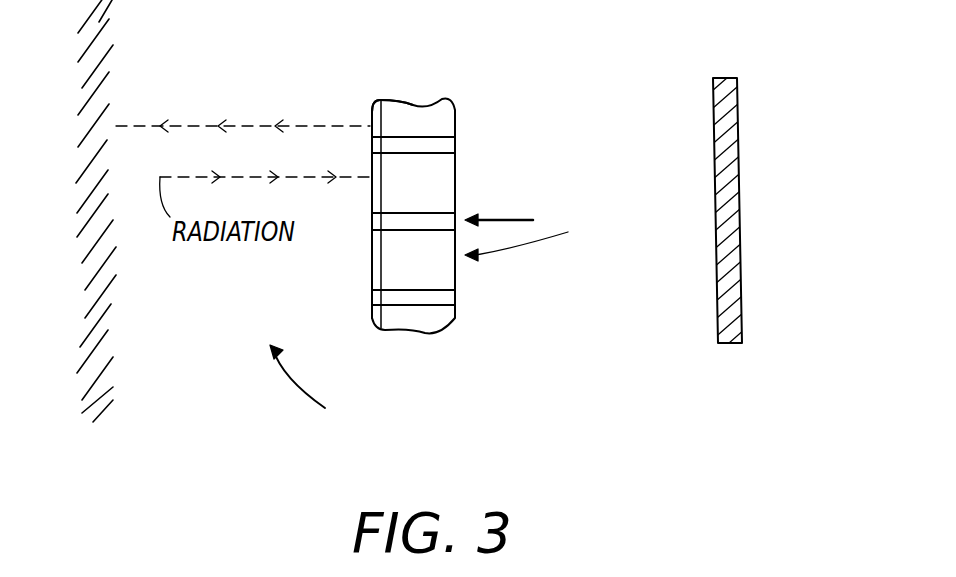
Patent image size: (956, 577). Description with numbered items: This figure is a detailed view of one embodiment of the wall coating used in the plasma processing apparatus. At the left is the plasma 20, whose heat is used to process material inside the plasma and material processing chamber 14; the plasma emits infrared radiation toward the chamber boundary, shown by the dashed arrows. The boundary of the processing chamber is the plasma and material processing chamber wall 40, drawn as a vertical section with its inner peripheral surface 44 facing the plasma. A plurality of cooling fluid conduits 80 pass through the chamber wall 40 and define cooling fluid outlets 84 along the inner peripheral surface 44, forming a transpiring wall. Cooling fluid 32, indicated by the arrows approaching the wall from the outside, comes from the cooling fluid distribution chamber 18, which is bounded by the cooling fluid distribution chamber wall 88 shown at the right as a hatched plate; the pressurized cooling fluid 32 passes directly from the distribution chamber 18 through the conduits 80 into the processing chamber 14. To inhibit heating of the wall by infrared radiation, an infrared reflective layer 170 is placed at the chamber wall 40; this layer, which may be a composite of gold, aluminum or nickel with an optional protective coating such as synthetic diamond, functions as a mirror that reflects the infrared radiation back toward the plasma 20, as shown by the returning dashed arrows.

The plasma and material processing chamber 14 is at (537, 234).
The cooling fluid distribution chamber 18 is at (779, 181).
The plasma 20 is at (92, 114).
The cooling fluid 32 is at (502, 220).
The plasma and material processing chamber wall 40 is at (382, 198).
The inner peripheral surface 44 is at (370, 113).
The cooling fluid conduits 80 is at (458, 295).
The cooling fluid outlets 84 is at (373, 295).
The cooling fluid distribution chamber wall 88 is at (772, 85).
The infrared reflective layer 170 is at (373, 250).